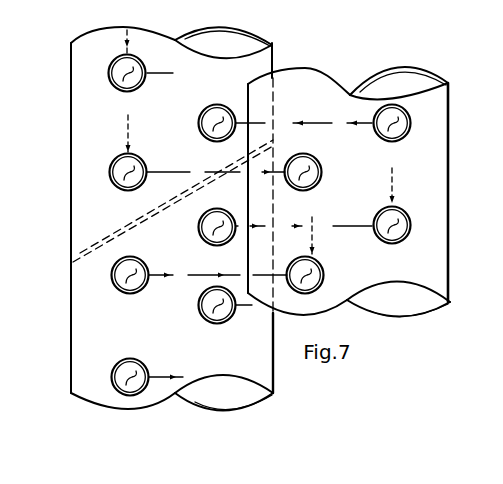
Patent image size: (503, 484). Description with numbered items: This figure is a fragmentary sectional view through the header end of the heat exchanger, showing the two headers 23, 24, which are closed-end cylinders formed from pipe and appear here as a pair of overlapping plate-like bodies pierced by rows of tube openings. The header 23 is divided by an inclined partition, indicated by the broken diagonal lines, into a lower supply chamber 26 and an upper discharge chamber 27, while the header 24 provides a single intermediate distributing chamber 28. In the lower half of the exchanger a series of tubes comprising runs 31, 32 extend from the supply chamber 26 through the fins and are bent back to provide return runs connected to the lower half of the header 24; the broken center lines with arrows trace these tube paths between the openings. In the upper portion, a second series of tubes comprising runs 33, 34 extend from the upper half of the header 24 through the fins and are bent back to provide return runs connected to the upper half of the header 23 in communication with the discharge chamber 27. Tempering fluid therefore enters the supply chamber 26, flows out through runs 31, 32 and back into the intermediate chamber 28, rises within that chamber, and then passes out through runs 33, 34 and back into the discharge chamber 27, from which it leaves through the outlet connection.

The header 23 is at (84, 164).
The header 24 is at (445, 124).
The lower supply chamber 26 is at (222, 392).
The upper discharge chamber 27 is at (88, 97).
The intermediate distributing chamber 28 is at (427, 165).
The tube run 31 is at (115, 366).
The tube run 32 is at (200, 228).
The tube run 33 is at (323, 172).
The tube run 34 is at (410, 121).